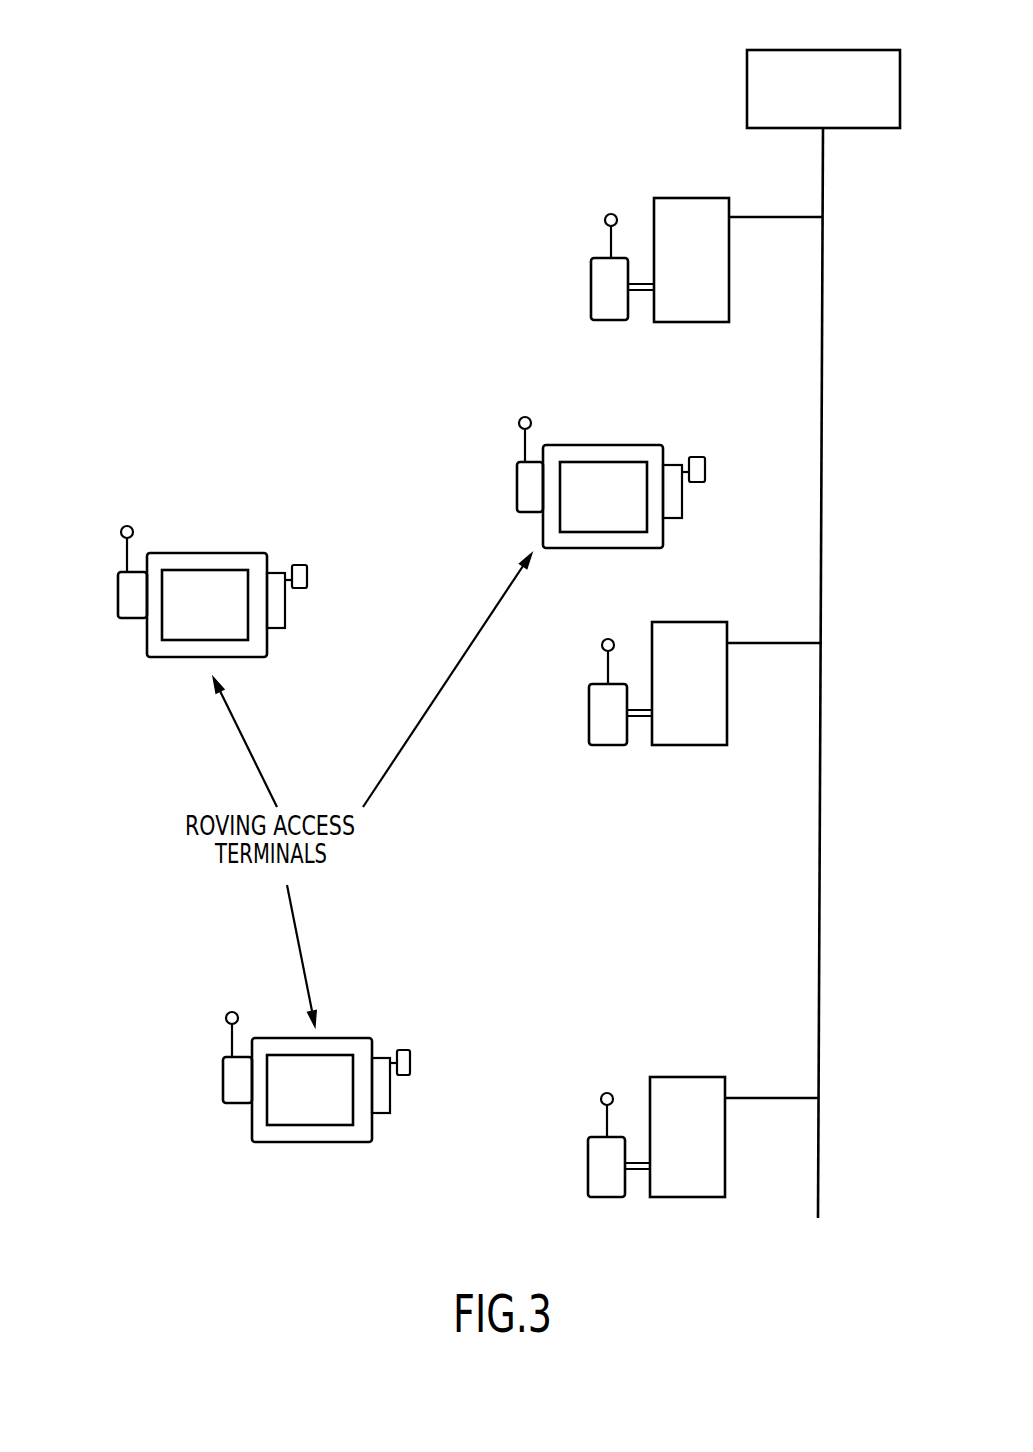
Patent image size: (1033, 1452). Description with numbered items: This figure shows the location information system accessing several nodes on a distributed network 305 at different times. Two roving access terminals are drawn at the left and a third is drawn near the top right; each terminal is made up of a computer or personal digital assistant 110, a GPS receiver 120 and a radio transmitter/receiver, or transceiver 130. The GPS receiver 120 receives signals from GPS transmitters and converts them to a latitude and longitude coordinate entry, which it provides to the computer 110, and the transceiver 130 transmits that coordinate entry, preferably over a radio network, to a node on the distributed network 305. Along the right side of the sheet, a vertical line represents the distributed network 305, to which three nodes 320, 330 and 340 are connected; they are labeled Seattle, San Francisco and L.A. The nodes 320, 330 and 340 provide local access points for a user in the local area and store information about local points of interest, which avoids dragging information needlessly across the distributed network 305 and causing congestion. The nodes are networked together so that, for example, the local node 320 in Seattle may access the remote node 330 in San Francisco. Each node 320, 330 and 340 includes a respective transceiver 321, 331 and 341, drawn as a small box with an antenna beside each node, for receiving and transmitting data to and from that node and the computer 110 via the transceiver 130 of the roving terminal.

The distributed network 305 is at (827, 50).
The node 320 is at (690, 198).
The transceiver 321 is at (591, 288).
The node 330 is at (690, 622).
The transceiver 331 is at (589, 713).
The node 340 is at (688, 1077).
The transceiver 341 is at (588, 1165).
The computer 110 is at (270, 648).
The GPS receiver 120 is at (307, 578).
The transceiver 130 is at (118, 593).